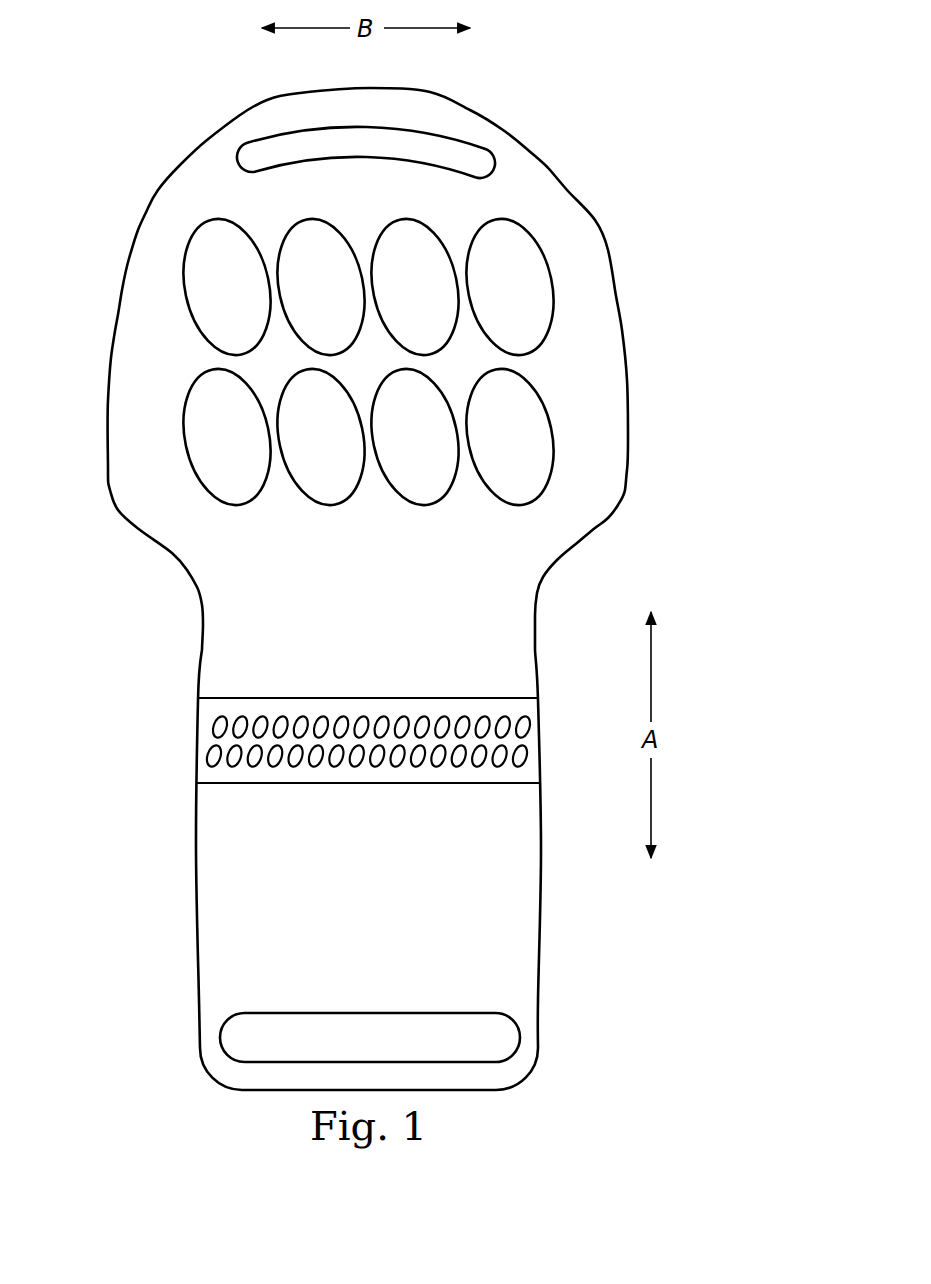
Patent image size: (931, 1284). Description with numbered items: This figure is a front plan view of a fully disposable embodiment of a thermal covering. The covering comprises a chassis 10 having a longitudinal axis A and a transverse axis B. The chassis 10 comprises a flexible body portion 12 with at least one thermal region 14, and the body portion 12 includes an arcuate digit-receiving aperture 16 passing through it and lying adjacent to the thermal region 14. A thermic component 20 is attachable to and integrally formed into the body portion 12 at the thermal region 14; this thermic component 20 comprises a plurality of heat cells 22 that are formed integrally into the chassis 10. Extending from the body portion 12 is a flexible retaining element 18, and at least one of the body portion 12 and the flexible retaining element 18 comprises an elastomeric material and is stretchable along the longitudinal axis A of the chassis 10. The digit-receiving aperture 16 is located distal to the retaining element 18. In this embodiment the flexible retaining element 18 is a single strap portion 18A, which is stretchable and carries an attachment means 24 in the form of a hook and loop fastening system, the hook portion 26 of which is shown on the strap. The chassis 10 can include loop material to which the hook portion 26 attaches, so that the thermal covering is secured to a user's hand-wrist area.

The chassis 10 is at (632, 166).
The flexible body portion 12 is at (108, 437).
The thermal region 14 is at (135, 322).
The arcuate digit-receiving aperture 16 is at (455, 150).
The flexible retaining element 18 is at (178, 878).
The single strap portion 18A is at (487, 928).
The thermic component 20 is at (553, 220).
The heat cells 22 is at (290, 250).
The attachment means 24 is at (520, 1043).
The hook portion 26 is at (245, 1040).